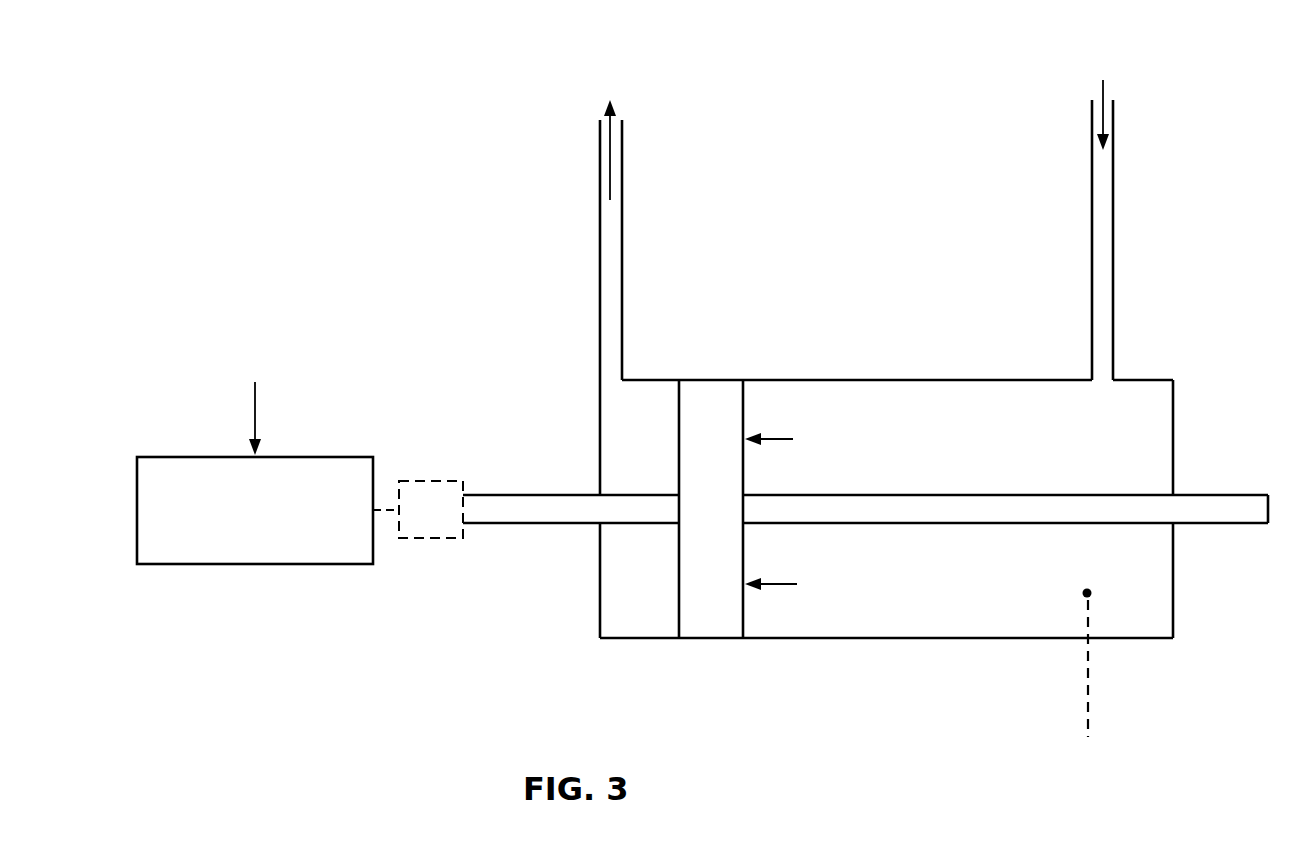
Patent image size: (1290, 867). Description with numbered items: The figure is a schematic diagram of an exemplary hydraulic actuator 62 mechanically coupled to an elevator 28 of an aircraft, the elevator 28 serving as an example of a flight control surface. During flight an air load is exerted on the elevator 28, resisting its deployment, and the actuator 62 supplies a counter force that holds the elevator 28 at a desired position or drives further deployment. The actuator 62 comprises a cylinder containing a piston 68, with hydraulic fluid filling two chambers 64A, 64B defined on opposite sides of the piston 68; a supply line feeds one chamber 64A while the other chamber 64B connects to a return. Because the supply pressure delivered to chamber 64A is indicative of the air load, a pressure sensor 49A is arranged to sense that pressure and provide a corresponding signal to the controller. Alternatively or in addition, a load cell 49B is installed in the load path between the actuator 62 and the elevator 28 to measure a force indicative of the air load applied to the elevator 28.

The actuator 62 is at (536, 287).
The chamber 64A is at (876, 410).
The chamber 64B is at (647, 440).
The piston 68 is at (708, 437).
The elevator 28 is at (255, 445).
The pressure sensor 49A is at (1083, 594).
The load cell 49B is at (432, 540).